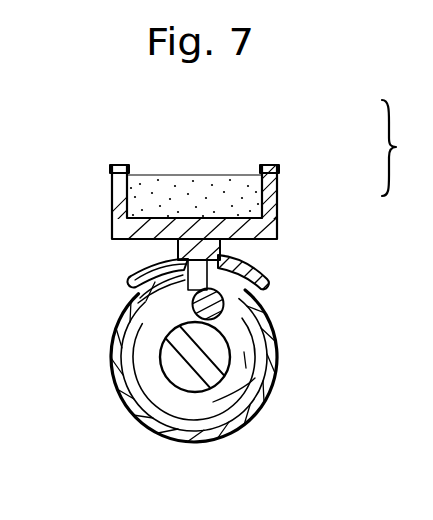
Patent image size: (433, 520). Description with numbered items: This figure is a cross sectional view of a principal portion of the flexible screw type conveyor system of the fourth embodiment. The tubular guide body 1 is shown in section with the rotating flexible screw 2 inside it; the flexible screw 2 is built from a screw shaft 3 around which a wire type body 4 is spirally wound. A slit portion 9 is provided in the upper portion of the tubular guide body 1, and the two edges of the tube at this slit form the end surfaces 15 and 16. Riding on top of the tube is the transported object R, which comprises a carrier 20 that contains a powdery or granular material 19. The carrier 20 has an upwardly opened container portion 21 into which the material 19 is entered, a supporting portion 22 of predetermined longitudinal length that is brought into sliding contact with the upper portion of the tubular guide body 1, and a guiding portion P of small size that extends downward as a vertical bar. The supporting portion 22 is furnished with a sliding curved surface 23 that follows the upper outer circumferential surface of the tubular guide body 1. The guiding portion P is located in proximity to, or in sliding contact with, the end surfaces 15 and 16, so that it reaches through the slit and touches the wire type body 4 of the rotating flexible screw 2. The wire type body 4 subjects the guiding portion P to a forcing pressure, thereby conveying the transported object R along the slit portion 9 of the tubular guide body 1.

The tubular guide body 1 is at (266, 398).
The flexible screw 2 is at (226, 423).
The screw shaft 3 is at (178, 395).
The wire type body 4 is at (264, 360).
The slit portion 9 is at (187, 260).
The end surface 15 is at (160, 303).
The end surface 16 is at (219, 262).
The powdery or granular material 19 is at (231, 175).
The carrier 20 is at (280, 216).
The container portion 21 is at (128, 207).
The supporting portion 22 is at (150, 270).
The sliding curved surface 23 is at (268, 292).
The guiding portion P is at (193, 316).
The transported object R is at (399, 148).